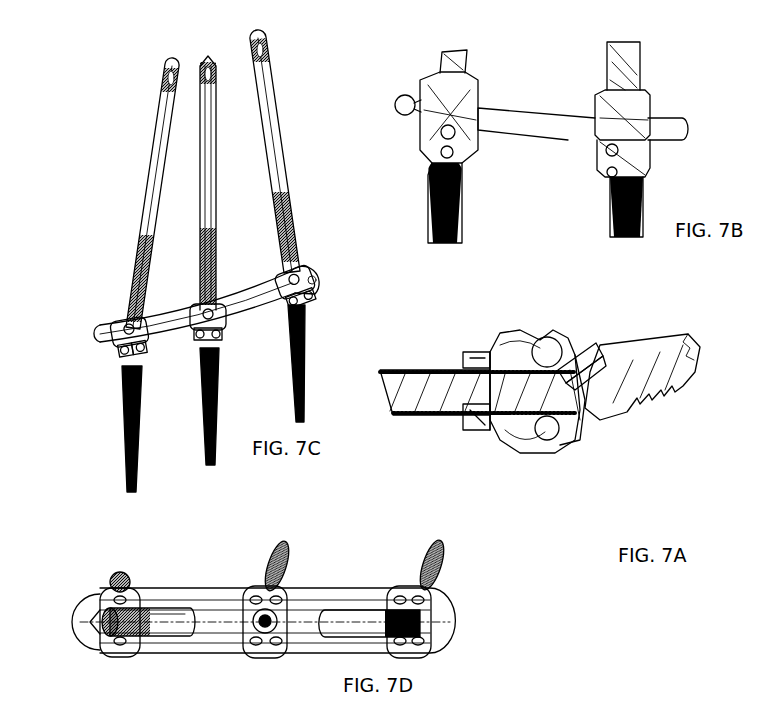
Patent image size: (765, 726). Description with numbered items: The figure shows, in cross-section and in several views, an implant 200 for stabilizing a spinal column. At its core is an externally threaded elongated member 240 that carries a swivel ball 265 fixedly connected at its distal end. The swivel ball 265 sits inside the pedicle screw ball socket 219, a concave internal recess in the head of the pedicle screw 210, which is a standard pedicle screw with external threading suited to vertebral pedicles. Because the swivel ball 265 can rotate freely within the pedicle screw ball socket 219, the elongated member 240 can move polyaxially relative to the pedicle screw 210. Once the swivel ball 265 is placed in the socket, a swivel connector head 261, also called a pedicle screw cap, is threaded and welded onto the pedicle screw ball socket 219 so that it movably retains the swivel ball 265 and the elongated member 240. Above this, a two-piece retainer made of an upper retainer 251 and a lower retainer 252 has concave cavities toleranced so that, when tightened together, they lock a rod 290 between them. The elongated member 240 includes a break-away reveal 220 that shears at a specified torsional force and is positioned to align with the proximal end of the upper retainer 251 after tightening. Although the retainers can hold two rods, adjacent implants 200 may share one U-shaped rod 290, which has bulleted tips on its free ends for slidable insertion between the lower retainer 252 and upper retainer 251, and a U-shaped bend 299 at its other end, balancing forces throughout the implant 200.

In FIG. 7C, the implant 200 is at (312, 218).
In FIG. 7A, the implant 200 is at (523, 318).
In FIG. 7C, the pedicle screw 210 is at (200, 423).
In FIG. 7A, the pedicle screw 210 is at (660, 405).
In FIG. 7D, the pedicle screw 210 is at (462, 565).
In FIG. 7B, the pedicle screw ball socket 219 is at (612, 173).
In FIG. 7B, the break-away reveal 220 is at (609, 88).
In FIG. 7C, the externally threaded elongated member 240 is at (123, 222).
In FIG. 7A, the externally threaded elongated member 240 is at (421, 422).
In FIG. 7D, the externally threaded elongated member 240 is at (365, 617).
In FIG. 7C, the upper retainer 251 is at (108, 308).
In FIG. 7B, the upper retainer 251 is at (654, 96).
In FIG. 7A, the upper retainer 251 is at (502, 462).
In FIG. 7D, the upper retainer 251 is at (427, 642).
In FIG. 7C, the lower retainer 252 is at (139, 354).
In FIG. 7B, the lower retainer 252 is at (654, 151).
In FIG. 7A, the lower retainer 252 is at (576, 441).
In FIG. 7C, the swivel connector head 261 is at (106, 357).
In FIG. 7A, the swivel connector head 261 is at (603, 338).
In FIG. 7B, the swivel ball 265 is at (609, 150).
In FIG. 7C, the rod 290 is at (250, 322).
In FIG. 7B, the rod 290 is at (548, 107).
In FIG. 7A, the rod 290 is at (552, 433).
In FIG. 7D, the rod 290 is at (220, 582).
In FIG. 7C, the U-shaped bend 299 is at (334, 273).
In FIG. 7D, the U-shaped bend 299 is at (85, 582).